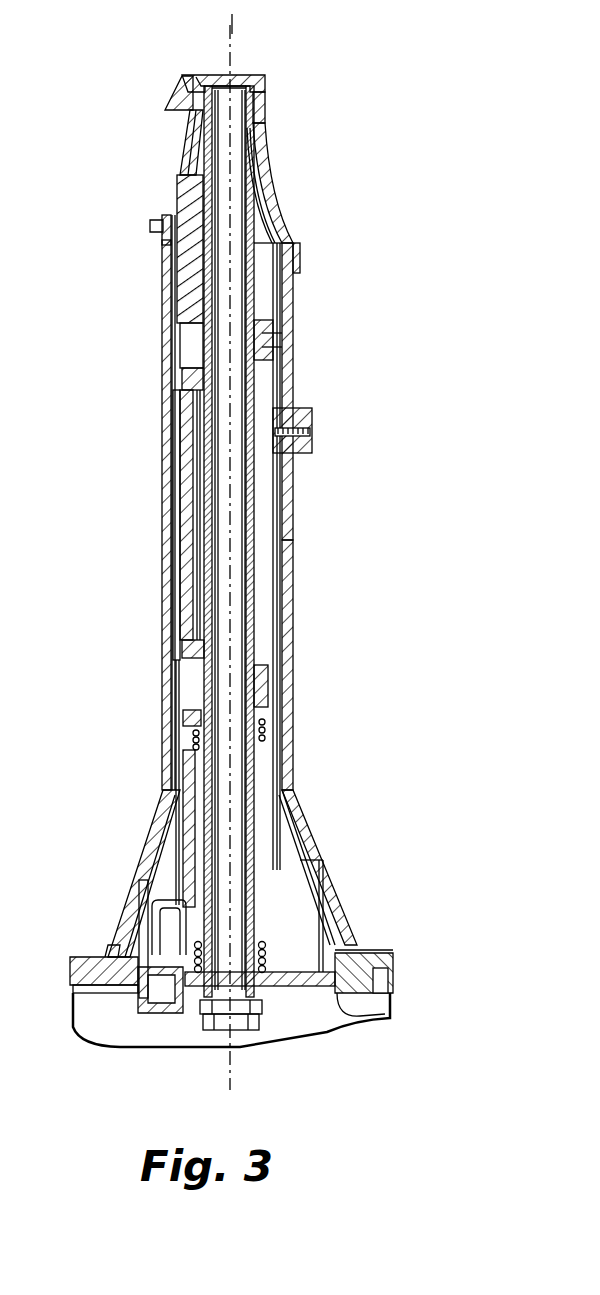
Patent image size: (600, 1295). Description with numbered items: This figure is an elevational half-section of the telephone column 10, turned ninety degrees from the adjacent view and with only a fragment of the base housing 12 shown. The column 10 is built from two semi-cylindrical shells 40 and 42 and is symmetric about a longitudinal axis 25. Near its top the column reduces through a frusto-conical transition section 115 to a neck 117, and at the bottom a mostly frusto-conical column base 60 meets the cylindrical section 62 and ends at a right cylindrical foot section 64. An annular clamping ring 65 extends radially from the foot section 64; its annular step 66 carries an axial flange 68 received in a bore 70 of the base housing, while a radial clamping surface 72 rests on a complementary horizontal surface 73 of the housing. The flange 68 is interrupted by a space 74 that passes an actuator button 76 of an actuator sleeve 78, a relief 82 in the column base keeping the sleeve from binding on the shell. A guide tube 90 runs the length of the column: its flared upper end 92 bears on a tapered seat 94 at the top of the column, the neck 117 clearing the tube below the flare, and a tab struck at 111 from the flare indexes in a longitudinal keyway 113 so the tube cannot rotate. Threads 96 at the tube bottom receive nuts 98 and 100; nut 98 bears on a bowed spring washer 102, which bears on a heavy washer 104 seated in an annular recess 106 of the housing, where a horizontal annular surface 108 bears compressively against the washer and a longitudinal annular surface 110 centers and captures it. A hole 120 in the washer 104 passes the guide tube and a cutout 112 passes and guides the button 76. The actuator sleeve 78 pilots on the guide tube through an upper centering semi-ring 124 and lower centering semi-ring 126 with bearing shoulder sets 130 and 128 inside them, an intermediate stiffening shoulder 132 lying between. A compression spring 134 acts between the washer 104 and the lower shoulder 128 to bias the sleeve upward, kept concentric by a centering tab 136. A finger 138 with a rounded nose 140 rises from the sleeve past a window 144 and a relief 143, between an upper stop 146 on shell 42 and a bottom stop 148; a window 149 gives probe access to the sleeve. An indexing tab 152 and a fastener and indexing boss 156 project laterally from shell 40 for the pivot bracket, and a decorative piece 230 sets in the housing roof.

The column 10 is at (302, 567).
The base housing 12 is at (72, 981).
The longitudinal axis 25 is at (232, 24).
The semi-cylindrical shell 40 is at (293, 644).
The semi-cylindrical shell 42 is at (167, 579).
The column base 60 is at (302, 809).
The cylindrical section 62 is at (293, 591).
The cylindrical foot section 64 is at (356, 952).
The clamping ring 65 is at (108, 949).
The annular step 66 is at (362, 955).
The axial annular flange 68 is at (357, 955).
The bore 70 is at (341, 950).
The radial surface 72 is at (379, 955).
The horizontal surface 73 is at (139, 906).
The space 74 is at (95, 995).
The actuator button 76 is at (155, 1011).
The actuator sleeve 78 is at (188, 773).
The relief 82 is at (165, 834).
The guide tube 90 is at (275, 521).
The flared upper end 92 is at (255, 78).
The tapered bearing surface 94 is at (263, 93).
The threads 96 is at (236, 1035).
The nut 98 is at (210, 1031).
The nut 100 is at (215, 1041).
The bowed spring washer 102 is at (263, 948).
The heavy washer 104 is at (330, 993).
The annular recess 106 is at (383, 1012).
The horizontal annular surface 108 is at (325, 978).
The longitudinal annular surface 110 is at (388, 986).
The tab 111 is at (220, 78).
The cutout 112 is at (180, 1014).
The longitudinal keyway 113 is at (205, 75).
The frusto-conical transition section 115 is at (276, 186).
The neck 117 is at (262, 120).
The hole 120 is at (319, 893).
The upper centering semi-ring 124 is at (262, 339).
The lower centering semi-ring 126 is at (262, 679).
The lower bearing shoulder set 128 is at (195, 649).
The upper bearing shoulder set 130 is at (210, 340).
The intermediate stiffening shoulder 132 is at (190, 517).
The compression spring 134 is at (287, 880).
The centering tab 136 is at (188, 739).
The finger 138 is at (170, 238).
The rounded nose 140 is at (183, 181).
The relief 143 is at (163, 272).
The window 144 is at (186, 151).
The upper stop 146 is at (168, 100).
The bottom stop 148 is at (150, 224).
The window 149 is at (172, 696).
The indexing tab 152 is at (300, 262).
The fastener and indexing boss 156 is at (298, 446).
The decorative piece 230 is at (396, 961).